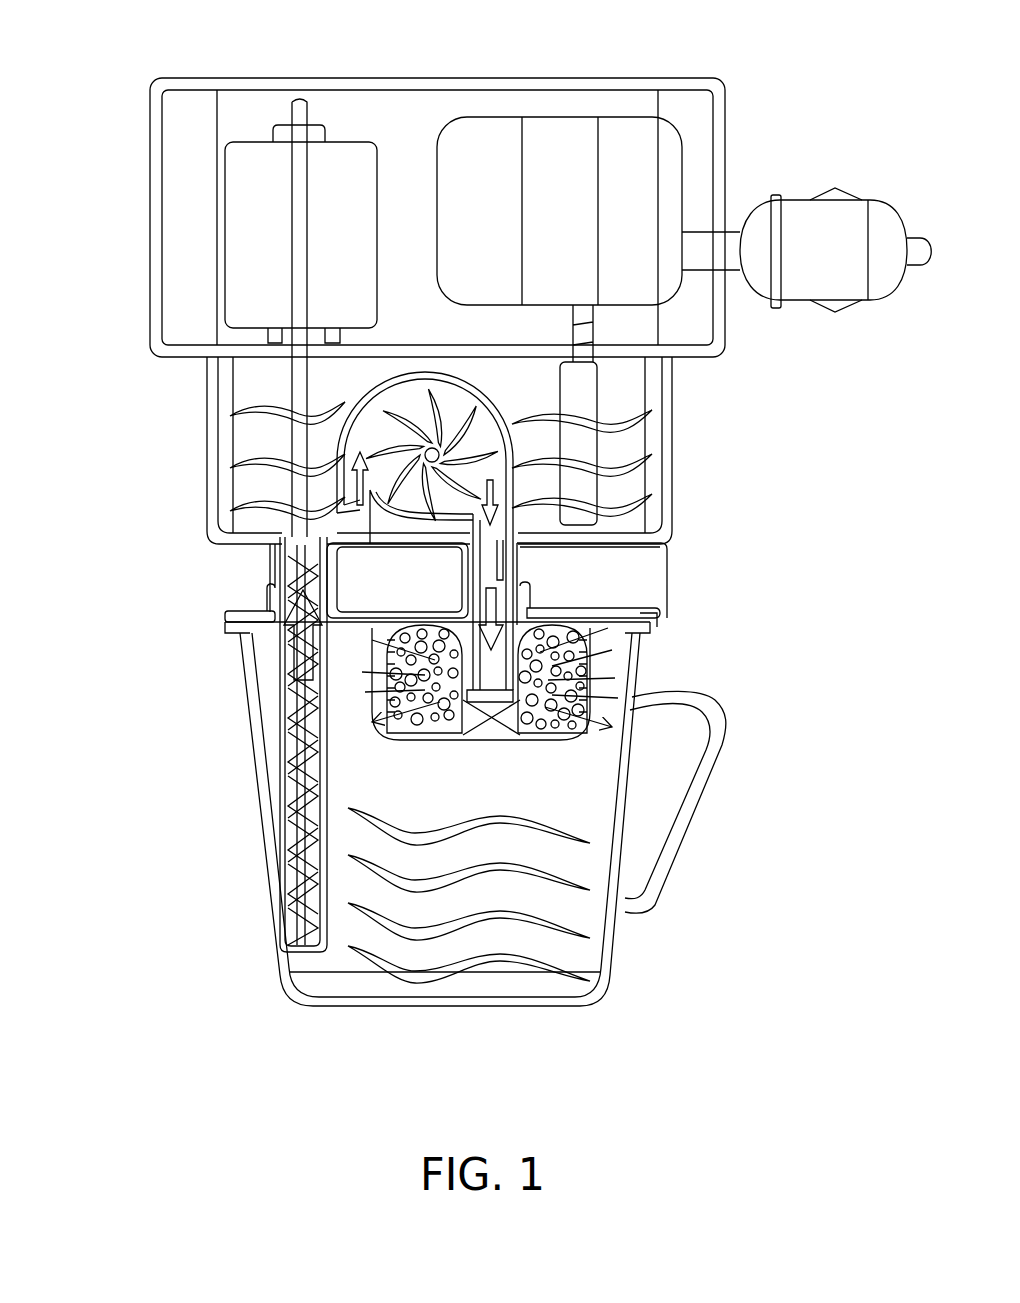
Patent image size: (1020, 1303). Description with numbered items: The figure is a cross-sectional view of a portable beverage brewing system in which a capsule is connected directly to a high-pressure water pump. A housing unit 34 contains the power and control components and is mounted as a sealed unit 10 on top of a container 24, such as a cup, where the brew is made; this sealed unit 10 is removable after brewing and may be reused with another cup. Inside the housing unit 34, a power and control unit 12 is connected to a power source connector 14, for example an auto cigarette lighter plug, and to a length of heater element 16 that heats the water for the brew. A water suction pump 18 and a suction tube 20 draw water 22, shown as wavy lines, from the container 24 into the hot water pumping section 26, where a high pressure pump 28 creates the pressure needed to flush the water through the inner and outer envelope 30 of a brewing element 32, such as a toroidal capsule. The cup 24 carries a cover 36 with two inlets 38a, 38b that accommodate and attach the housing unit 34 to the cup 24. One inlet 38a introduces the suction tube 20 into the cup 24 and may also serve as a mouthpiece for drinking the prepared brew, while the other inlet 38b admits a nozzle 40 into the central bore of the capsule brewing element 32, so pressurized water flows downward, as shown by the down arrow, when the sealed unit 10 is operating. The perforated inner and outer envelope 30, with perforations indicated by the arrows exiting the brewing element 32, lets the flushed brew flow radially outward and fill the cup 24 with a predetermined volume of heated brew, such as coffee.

The sealed unit 10 is at (165, 392).
The power and control unit 12 is at (555, 117).
The power source connector 14 is at (793, 200).
The heater element 16 is at (597, 388).
The water suction pump 18 is at (235, 203).
The suction tube 20 is at (290, 689).
The water 22 is at (555, 915).
The container 24 is at (236, 822).
The hot water pumping section 26 is at (672, 490).
The high pressure pump 28 is at (345, 425).
The inner and outer envelope 30 is at (600, 655).
The brewing element 32 is at (565, 738).
The housing unit 34 is at (162, 143).
The cover 36 is at (242, 616).
The inlet 38a is at (270, 595).
The inlet 38b is at (528, 598).
The nozzle 40 is at (474, 558).